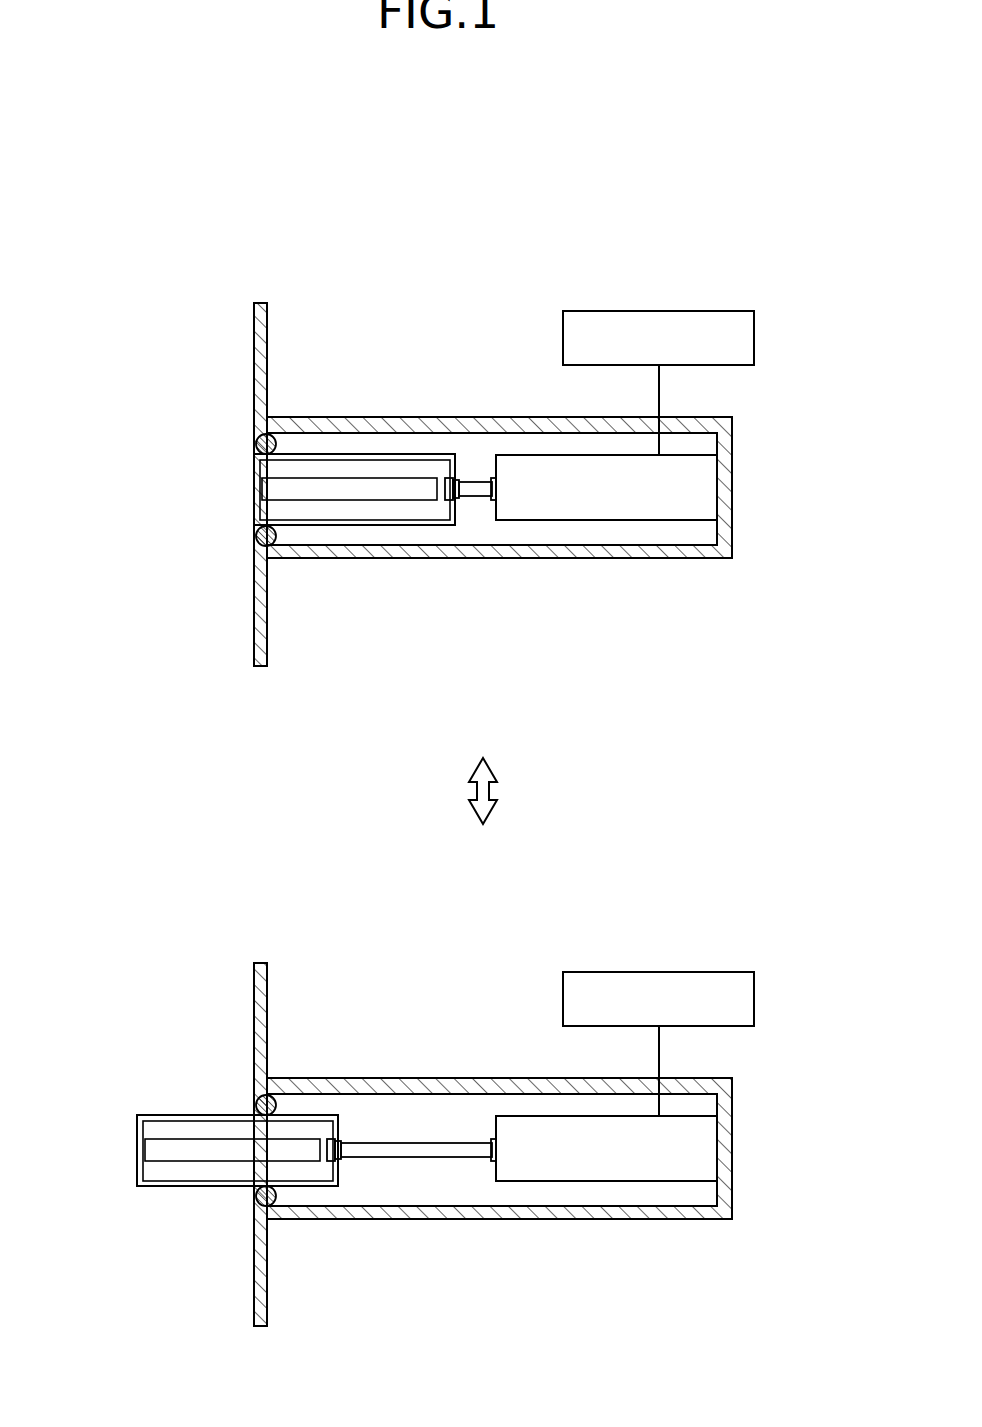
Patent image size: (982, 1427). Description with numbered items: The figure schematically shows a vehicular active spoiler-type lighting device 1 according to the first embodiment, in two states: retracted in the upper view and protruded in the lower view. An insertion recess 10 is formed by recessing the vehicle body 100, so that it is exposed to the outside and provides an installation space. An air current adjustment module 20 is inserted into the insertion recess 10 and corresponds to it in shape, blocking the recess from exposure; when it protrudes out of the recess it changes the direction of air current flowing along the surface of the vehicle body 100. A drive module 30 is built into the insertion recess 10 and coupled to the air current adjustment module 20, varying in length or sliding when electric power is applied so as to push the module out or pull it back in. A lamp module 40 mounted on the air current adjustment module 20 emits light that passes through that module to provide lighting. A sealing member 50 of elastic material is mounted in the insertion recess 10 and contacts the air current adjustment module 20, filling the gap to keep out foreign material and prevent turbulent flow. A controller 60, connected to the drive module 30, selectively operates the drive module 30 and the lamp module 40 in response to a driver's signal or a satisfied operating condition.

The vehicular active spoiler-type lighting device 1 is at (726, 147).
The insertion recess 10 is at (658, 546).
The air current adjustment module 20 is at (262, 467).
The drive module 30 is at (604, 513).
The lamp module 40 is at (447, 489).
The sealing member 50 is at (256, 535).
The controller 60 is at (755, 335).
The vehicle body 100 is at (267, 352).